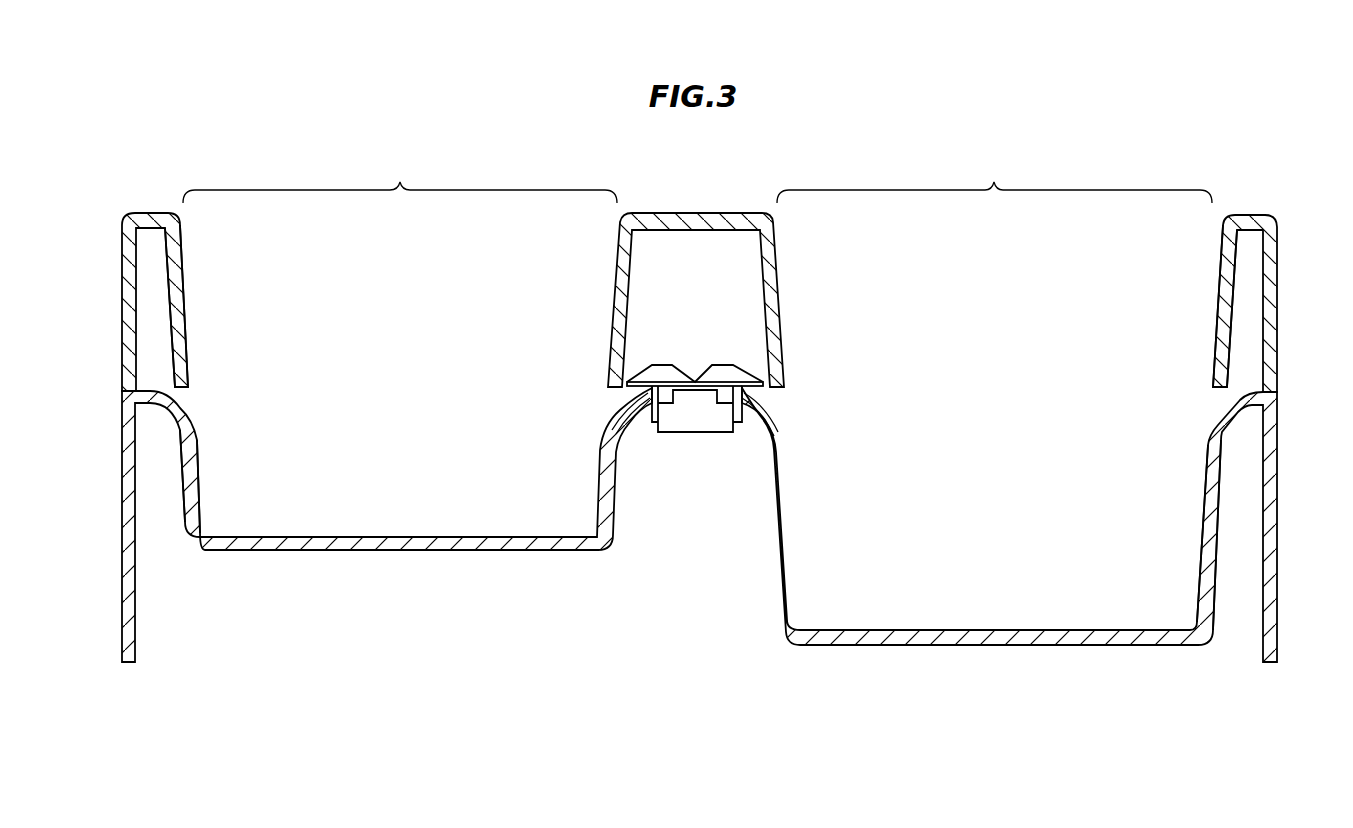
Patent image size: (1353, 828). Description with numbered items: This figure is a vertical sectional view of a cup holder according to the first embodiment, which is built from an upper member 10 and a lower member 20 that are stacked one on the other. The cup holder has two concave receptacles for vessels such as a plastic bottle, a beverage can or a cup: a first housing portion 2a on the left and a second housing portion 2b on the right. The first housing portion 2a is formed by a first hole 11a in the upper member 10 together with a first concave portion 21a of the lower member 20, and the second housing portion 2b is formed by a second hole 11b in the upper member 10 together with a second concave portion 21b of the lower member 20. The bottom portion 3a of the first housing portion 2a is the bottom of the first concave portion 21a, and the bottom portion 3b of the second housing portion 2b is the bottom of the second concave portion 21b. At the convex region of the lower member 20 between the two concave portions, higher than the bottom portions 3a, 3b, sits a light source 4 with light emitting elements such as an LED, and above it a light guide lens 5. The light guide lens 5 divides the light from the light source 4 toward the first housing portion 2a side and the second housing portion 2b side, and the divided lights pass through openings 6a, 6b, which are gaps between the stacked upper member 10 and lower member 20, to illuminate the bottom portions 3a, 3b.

The first housing portion 2a is at (400, 179).
The second housing portion 2b is at (994, 179).
The bottom portion of the first housing portion 3a is at (397, 535).
The bottom portion of the second housing portion 3b is at (1008, 630).
The light source 4 is at (697, 427).
The light guide lens 5 is at (670, 372).
The opening 6a is at (606, 393).
The opening 6b is at (779, 392).
The upper member 10 is at (128, 263).
The first hole 11a is at (175, 265).
The second hole 11b is at (1225, 277).
The lower member 20 is at (1272, 508).
The first concave portion 21a is at (197, 460).
The second concave portion 21b is at (1210, 478).